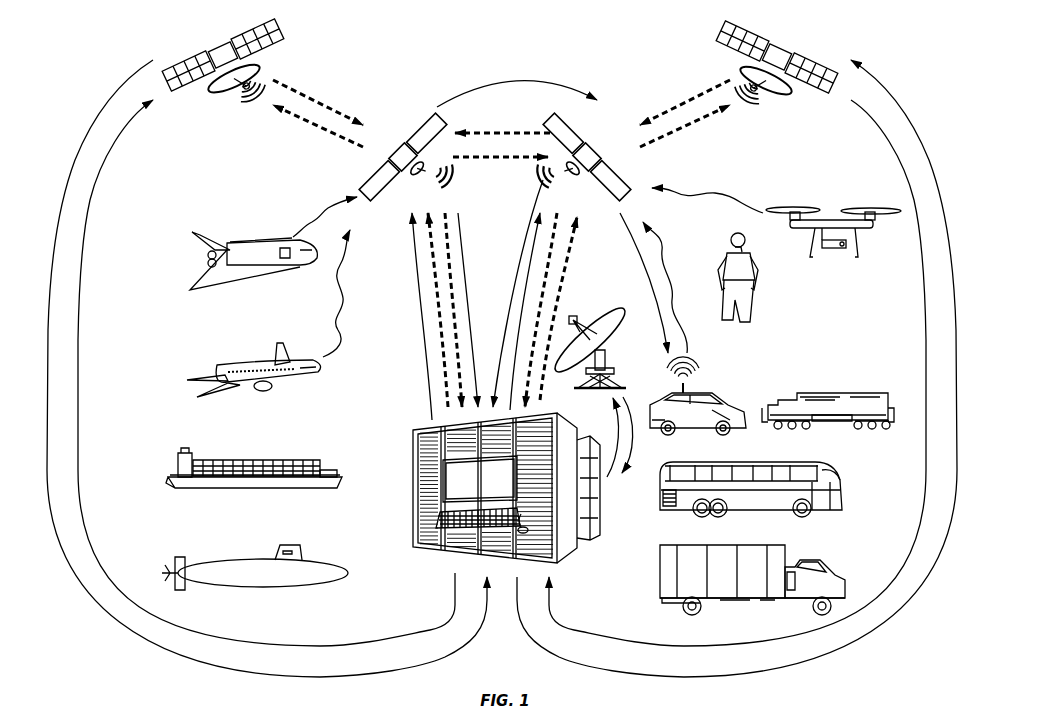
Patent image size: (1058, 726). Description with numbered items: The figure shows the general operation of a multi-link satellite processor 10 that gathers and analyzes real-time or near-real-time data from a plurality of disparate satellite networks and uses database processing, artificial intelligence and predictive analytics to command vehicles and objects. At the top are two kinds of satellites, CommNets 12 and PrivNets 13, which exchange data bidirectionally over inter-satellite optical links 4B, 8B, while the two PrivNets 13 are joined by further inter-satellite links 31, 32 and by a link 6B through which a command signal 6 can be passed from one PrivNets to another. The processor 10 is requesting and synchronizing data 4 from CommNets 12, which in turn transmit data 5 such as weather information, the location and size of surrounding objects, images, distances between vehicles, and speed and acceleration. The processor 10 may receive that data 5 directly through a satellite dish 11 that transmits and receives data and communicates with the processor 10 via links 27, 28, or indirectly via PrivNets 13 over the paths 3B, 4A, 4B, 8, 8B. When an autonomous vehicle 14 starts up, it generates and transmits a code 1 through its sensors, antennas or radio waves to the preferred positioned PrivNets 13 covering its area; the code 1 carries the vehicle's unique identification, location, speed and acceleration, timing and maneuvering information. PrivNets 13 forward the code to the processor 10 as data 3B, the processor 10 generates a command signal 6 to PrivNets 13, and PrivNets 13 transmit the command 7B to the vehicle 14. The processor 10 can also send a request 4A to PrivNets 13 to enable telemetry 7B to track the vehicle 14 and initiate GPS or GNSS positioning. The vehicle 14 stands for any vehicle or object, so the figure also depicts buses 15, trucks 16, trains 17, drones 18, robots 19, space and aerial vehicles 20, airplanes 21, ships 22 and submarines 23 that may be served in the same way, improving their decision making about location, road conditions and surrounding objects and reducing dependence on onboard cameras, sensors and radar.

The code 1 is at (528, 264).
The data request 4 is at (517, 368).
The CommNets data 5 is at (486, 368).
The command signal 6 is at (476, 316).
The PrivNets data link 8 is at (501, 310).
The multi-link satellite processor 10 is at (495, 488).
The satellite dish 11 is at (589, 344).
The CommNets 12 is at (500, 75).
The PrivNets 13 is at (494, 171).
The vehicle 14 is at (698, 396).
The buses 15 is at (763, 489).
The trucks 16 is at (752, 580).
The trains 17 is at (828, 401).
The drones 18 is at (833, 237).
The robots 19 is at (750, 277).
The space and aerial vehicles 20 is at (253, 253).
The airplanes 21 is at (254, 368).
The ships 22 is at (254, 463).
The submarines 23 is at (255, 561).
The communication link 27 is at (605, 437).
The communication link 28 is at (638, 435).
The inter-satellite optical link 31 is at (502, 123).
The inter-satellite optical link 32 is at (500, 167).
The data transmission to processor 3B is at (500, 293).
The telemetry request 4A is at (502, 310).
The inter-satellite optical link 4B is at (501, 127).
The inter-PrivNets link 6B is at (517, 91).
The command transmission 7B is at (644, 283).
The inter-satellite optical link 8B is at (501, 102).